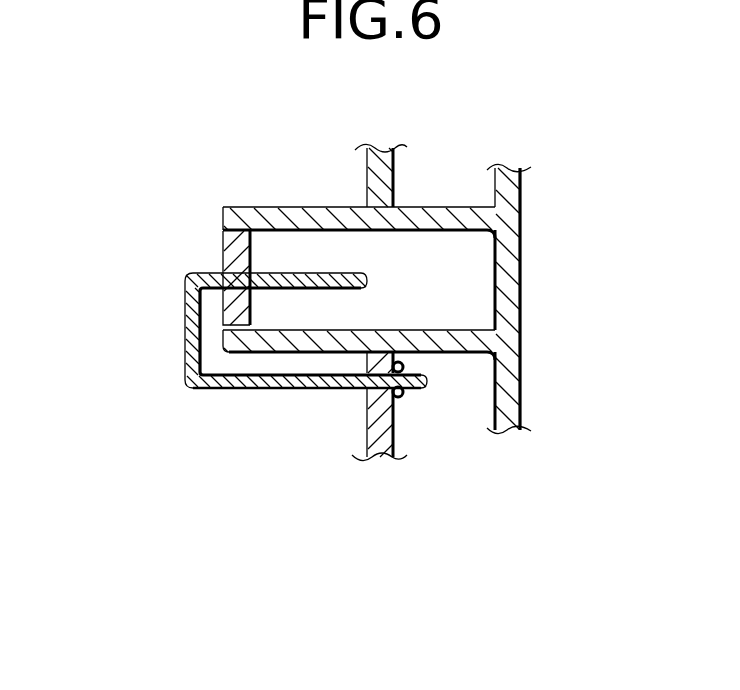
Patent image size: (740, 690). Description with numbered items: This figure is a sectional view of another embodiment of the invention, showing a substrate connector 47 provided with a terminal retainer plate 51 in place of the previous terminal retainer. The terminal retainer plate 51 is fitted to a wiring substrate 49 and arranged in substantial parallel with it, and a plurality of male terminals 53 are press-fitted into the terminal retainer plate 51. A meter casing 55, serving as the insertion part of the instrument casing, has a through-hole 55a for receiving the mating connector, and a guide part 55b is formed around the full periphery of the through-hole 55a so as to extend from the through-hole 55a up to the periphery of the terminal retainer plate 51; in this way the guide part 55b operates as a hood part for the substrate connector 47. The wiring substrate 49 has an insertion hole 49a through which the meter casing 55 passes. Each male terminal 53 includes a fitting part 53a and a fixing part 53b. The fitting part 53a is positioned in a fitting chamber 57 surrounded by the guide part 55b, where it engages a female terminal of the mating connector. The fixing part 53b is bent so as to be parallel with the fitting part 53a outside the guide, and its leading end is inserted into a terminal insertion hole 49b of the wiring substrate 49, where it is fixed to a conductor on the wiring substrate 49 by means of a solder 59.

The substrate connector 47 is at (177, 339).
The wiring substrate 49 is at (367, 168).
The insertion hole 49a is at (362, 236).
The terminal insertion hole 49b is at (357, 372).
The terminal retainer plate 51 is at (232, 247).
The male terminal 53 is at (203, 388).
The fitting part 53a is at (307, 270).
The fixing part 53b is at (283, 388).
The meter casing 55 is at (522, 170).
The through-hole 55a is at (518, 243).
The guide part 55b is at (437, 328).
The fitting chamber 57 is at (462, 266).
The solder 59 is at (404, 396).